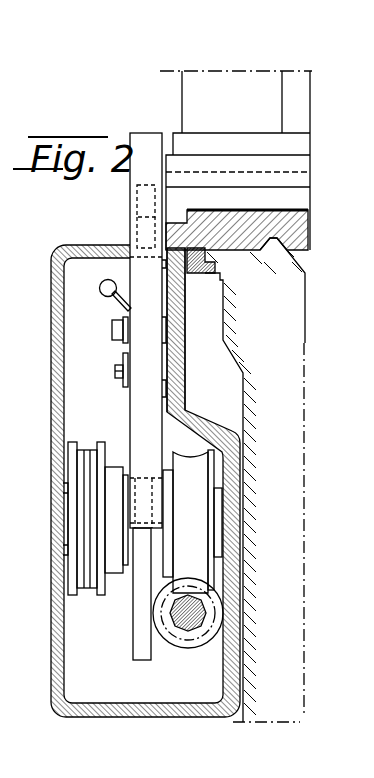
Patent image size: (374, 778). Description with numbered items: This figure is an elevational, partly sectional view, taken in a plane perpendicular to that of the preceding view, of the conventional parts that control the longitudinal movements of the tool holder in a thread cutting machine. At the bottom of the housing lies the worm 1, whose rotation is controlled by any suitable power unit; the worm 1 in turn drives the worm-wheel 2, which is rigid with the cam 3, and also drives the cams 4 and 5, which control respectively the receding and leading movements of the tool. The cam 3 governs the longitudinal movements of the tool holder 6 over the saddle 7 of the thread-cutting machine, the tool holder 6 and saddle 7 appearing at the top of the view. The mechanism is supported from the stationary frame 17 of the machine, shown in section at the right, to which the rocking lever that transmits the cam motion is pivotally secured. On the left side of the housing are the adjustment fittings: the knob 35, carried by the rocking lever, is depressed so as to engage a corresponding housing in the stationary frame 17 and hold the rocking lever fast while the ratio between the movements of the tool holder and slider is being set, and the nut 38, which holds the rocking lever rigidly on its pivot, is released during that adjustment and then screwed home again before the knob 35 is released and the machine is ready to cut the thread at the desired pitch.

The worm 1 is at (182, 638).
The worm-wheel 2 is at (183, 462).
The cam 3 is at (140, 656).
The cam 4 is at (100, 593).
The cam 5 is at (72, 574).
The tool holder 6 is at (298, 197).
The saddle 7 is at (298, 232).
The frame 17 is at (187, 311).
The knob 35 is at (113, 331).
The nut 38 is at (115, 373).